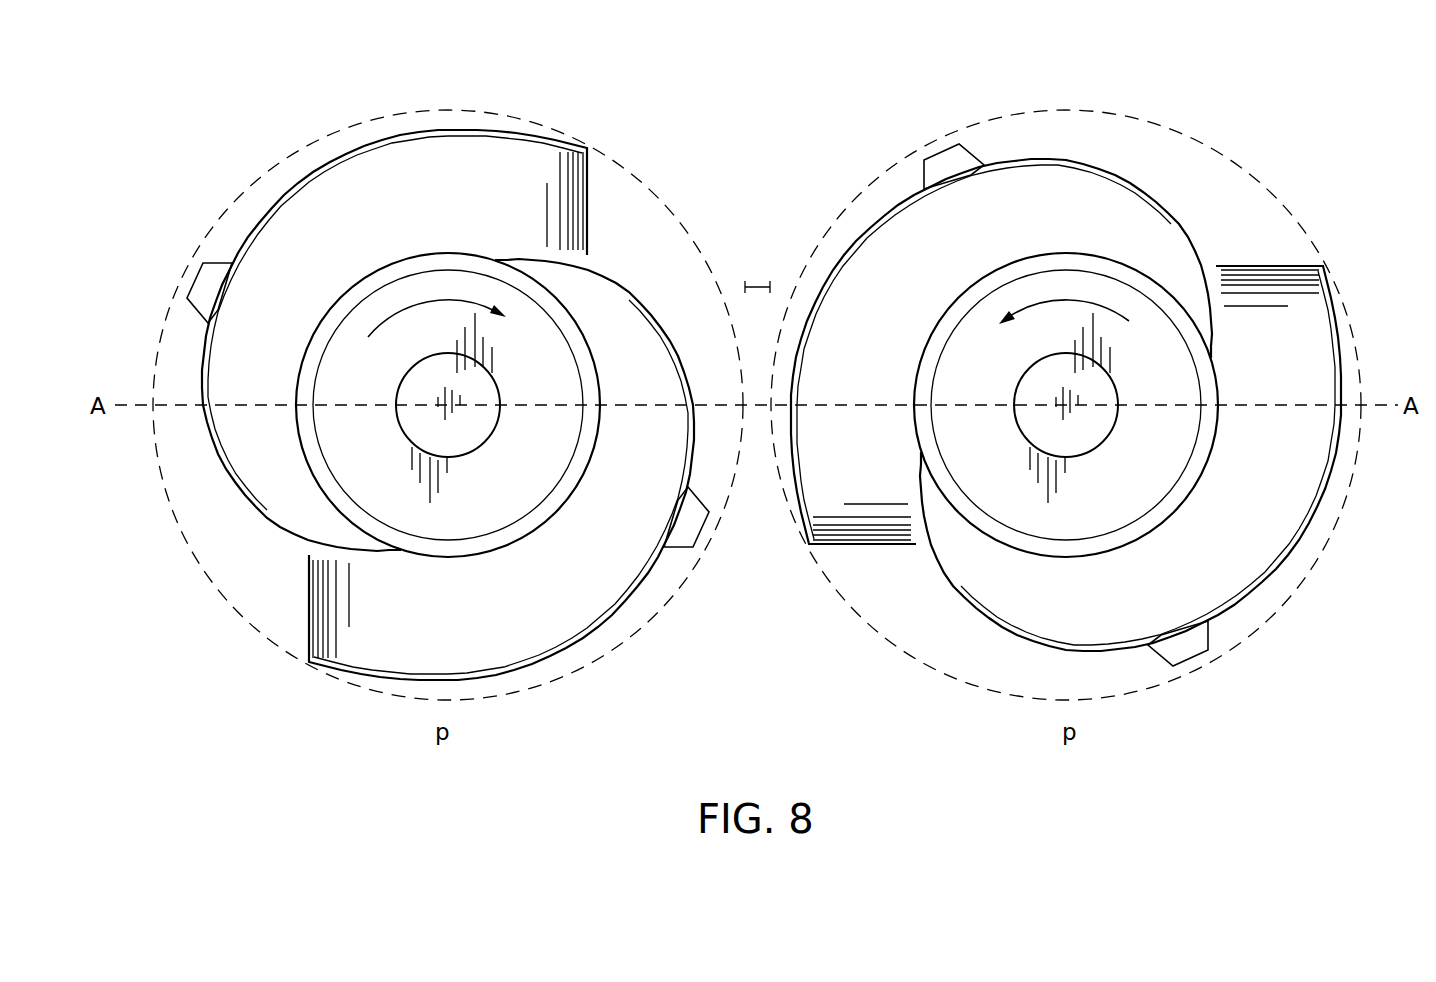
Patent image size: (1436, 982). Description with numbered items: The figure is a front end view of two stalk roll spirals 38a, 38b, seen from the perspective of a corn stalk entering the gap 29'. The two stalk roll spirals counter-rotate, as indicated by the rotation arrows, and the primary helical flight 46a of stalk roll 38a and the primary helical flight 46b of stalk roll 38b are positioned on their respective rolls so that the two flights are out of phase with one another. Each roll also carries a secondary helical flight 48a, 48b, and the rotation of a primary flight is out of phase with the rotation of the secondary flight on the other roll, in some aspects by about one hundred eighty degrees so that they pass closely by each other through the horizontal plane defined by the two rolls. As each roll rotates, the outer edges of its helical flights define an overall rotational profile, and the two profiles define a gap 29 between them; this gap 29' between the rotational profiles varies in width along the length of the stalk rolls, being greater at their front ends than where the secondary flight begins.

The first stalk roll spiral 38a is at (313, 133).
The second stalk roll spiral 38b is at (1105, 106).
The primary helical flight of first stalk roll 46a is at (590, 205).
The primary helical flight of second stalk roll 46b is at (1258, 265).
The secondary helical flight of first stalk roll 48a is at (307, 598).
The secondary helical flight of second stalk roll 48b is at (878, 548).
The gap 29 is at (729, 625).
The gap between rotational profiles 29' is at (760, 222).